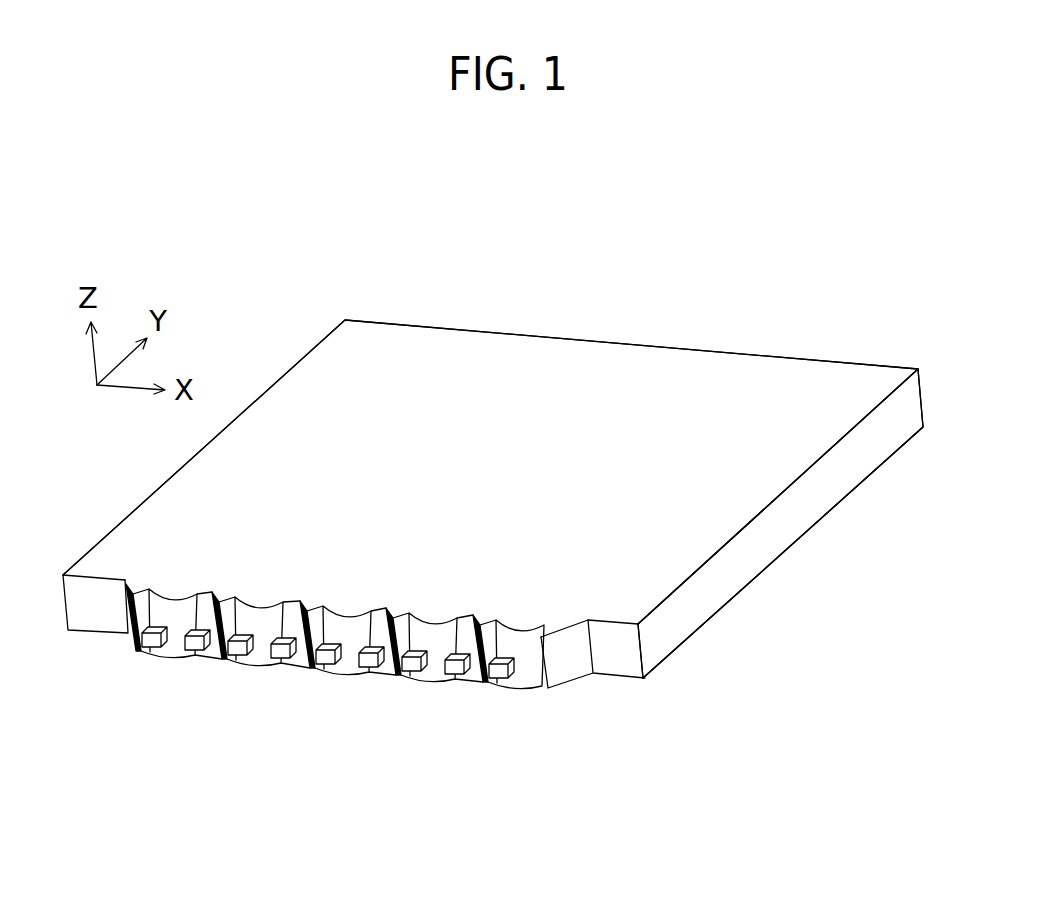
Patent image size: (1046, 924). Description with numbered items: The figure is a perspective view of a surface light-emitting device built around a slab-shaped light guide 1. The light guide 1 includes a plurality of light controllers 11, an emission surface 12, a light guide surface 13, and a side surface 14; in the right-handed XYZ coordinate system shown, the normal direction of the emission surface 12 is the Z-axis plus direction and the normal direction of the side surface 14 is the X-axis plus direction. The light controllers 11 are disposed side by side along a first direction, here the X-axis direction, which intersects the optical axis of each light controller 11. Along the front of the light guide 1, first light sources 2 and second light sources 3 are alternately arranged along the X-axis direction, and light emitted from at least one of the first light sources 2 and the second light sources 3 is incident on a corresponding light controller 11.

The light guide 1 is at (618, 332).
The first light source 2 is at (152, 648).
The second light source 3 is at (194, 651).
The light controller 11 is at (173, 665).
The emission surface 12 is at (768, 385).
The light guide surface 13 is at (762, 572).
The side surface 14 is at (840, 480).